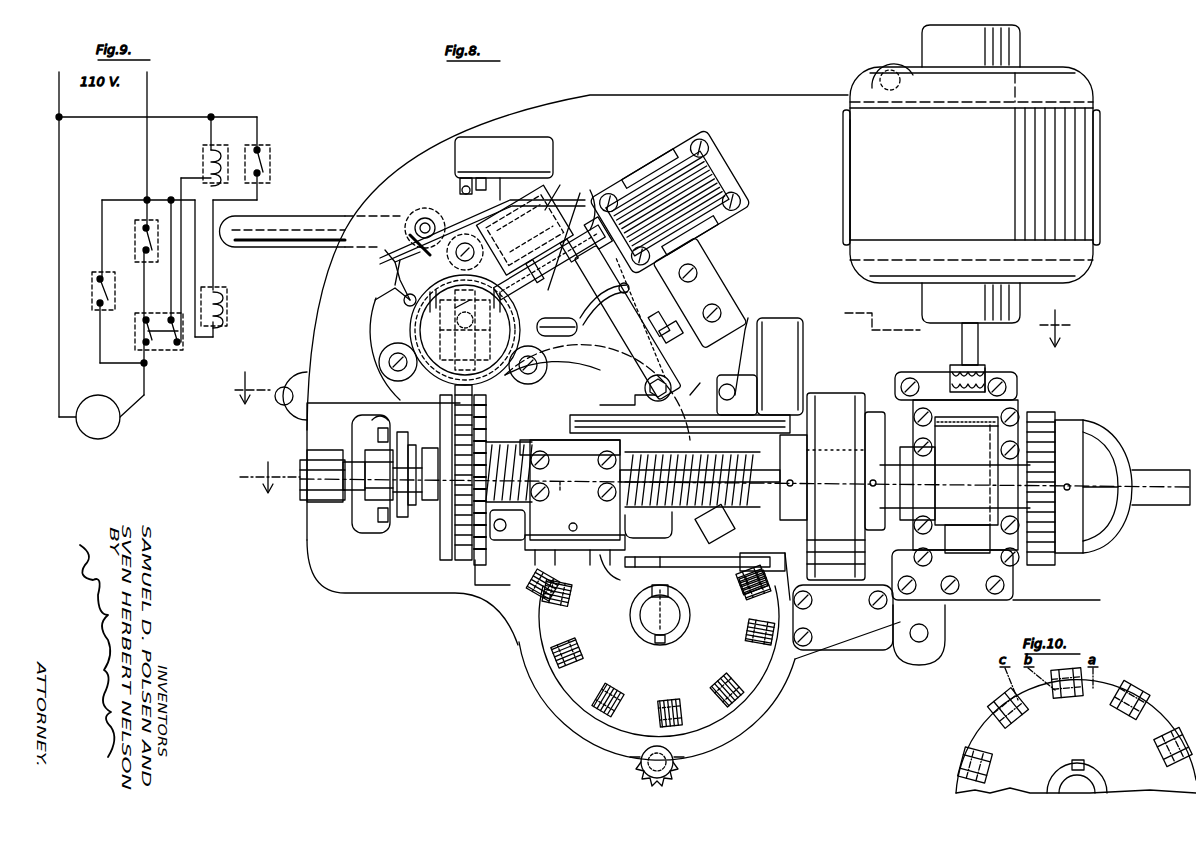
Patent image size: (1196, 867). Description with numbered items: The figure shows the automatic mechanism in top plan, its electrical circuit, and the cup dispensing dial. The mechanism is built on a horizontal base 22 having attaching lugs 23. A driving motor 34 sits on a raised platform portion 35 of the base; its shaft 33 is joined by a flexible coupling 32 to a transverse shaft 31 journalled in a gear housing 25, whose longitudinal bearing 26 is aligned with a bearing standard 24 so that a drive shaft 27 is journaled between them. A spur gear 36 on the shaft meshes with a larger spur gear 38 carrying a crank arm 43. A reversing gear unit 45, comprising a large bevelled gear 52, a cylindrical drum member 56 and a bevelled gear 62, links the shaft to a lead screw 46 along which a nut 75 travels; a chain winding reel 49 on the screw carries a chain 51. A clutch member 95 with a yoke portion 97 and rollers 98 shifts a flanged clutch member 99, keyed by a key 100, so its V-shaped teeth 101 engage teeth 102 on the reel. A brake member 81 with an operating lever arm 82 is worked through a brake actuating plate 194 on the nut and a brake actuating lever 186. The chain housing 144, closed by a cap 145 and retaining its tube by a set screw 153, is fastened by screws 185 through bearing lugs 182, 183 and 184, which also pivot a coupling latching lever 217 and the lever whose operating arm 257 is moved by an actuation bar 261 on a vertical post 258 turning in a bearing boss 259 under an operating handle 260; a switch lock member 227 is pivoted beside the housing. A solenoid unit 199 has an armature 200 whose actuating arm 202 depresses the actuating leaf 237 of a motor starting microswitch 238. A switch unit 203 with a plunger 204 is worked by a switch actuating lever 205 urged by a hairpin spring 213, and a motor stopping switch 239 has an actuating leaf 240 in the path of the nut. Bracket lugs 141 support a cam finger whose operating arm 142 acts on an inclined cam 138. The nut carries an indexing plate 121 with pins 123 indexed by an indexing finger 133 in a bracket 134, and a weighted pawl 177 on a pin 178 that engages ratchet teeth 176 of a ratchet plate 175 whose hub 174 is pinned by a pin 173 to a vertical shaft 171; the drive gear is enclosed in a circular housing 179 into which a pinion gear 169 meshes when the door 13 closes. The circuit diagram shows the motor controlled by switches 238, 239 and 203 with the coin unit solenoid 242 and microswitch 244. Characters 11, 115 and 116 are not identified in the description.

In FIG. 8, the base 22 is at (764, 100).
In FIG. 8, the attaching lugs 23 is at (284, 374).
In FIG. 9, the driving motor 34 is at (102, 440).
In FIG. 8, the driving motor 34 is at (855, 176).
In FIG. 8, the raised platform portion 35 is at (848, 195).
In FIG. 8, the motor shaft 33 is at (960, 332).
In FIG. 8, the flexible coupling 32 is at (952, 368).
In FIG. 8, the transverse horizontal shaft 31 is at (990, 376).
In FIG. 8, the gear housing 25 is at (938, 425).
In FIG. 8, the longitudinal bearing 26 is at (915, 448).
In FIG. 8, the spur gear 38 is at (1048, 414).
In FIG. 8, the spur gear 36 is at (1062, 470).
In FIG. 8, the crank arm 43 is at (1132, 456).
In FIG. 8, the door 13 is at (652, 357).
In FIG. 8, the section line 11 is at (266, 477).
In FIG. 9, the microswitch 238 is at (135, 246).
In FIG. 8, the microswitch 238 is at (548, 128).
In FIG. 8, the actuating leaf 237 is at (502, 177).
In FIG. 8, the coupling latching lever 217 is at (527, 200).
In FIG. 8, the switch lock member 227 is at (561, 185).
In FIG. 8, the actuating arm 202 is at (590, 205).
In FIG. 8, the armature 200 is at (602, 222).
In FIG. 9, the solenoid unit 199 is at (229, 307).
In FIG. 8, the solenoid unit 199 is at (718, 184).
In FIG. 9, the switch unit 203 is at (93, 285).
In FIG. 8, the switch unit 203 is at (712, 284).
In FIG. 8, the hairpin spring 213 is at (635, 298).
In FIG. 8, the operating plunger 204 is at (668, 338).
In FIG. 8, the switch actuating lever 205 is at (654, 360).
In FIG. 8, the brake actuating lever 186 is at (593, 375).
In FIG. 8, the brake actuating plate 194 is at (605, 404).
In FIG. 8, the operating lever arm 82 is at (648, 395).
In FIG. 8, the brake member 81 is at (754, 413).
In FIG. 8, the bearing boss 259 is at (792, 318).
In FIG. 8, the actuating leaf 240 is at (742, 389).
In FIG. 8, the cylindrical drum member 56 is at (824, 397).
In FIG. 8, the reversing gear unit 45 is at (850, 386).
In FIG. 8, the large bevelled gear 52 is at (872, 412).
In FIG. 8, the bevelled gear 62 is at (830, 443).
In FIG. 8, the operating handle 260 is at (310, 218).
In FIG. 8, the vertical post 258 is at (410, 225).
In FIG. 8, the actuation bar 261 is at (424, 222).
In FIG. 8, the bearing lug 184 is at (462, 242).
In FIG. 8, the operating arm 257 is at (372, 274).
In FIG. 8, the set screw 153 is at (385, 292).
In FIG. 8, the flanged closure cap 145 is at (404, 303).
In FIG. 8, the cylindrical housing member 144 is at (395, 322).
In FIG. 8, the operating arm 142 is at (465, 330).
In FIG. 8, the bearing lug 183 is at (380, 358).
In FIG. 8, the fastening screws 185 is at (380, 370).
In FIG. 8, the bearing lug 182 is at (546, 362).
In FIG. 8, the bracket lugs 141 is at (572, 400).
In FIG. 8, the flanged clutch member 99 is at (395, 418).
In FIG. 8, the rollers 98 is at (386, 428).
In FIG. 8, the V-shaped teeth 101 is at (405, 430).
In FIG. 8, the chain 51 is at (455, 418).
In FIG. 8, the lead screw 46 is at (432, 448).
In FIG. 8, the longitudinal drive shaft 27 is at (350, 470).
In FIG. 8, the key 100 is at (368, 475).
In FIG. 8, the bearing standard 24 is at (305, 498).
In FIG. 8, the clutch member 95 is at (346, 512).
In FIG. 8, the yoke portion 97 is at (365, 525).
In FIG. 8, the V-shaped teeth 102 is at (412, 505).
In FIG. 8, the chain winding reel 49 is at (452, 542).
In FIG. 8, the bracket 115 is at (500, 545).
In FIG. 8, the bracket arm 116 is at (494, 579).
In FIG. 8, the indexing plate 121 is at (601, 572).
In FIG. 8, the pins 123 is at (625, 578).
In FIG. 8, the inclined cam 138 is at (572, 502).
In FIG. 8, the pin 178 is at (560, 485).
In FIG. 8, the nut 75 is at (642, 452).
In FIG. 8, the weighted pawl 177 is at (645, 543).
In FIG. 10, the weighted pawl 177 is at (1095, 680).
In FIG. 8, the indexing finger 133 is at (694, 562).
In FIG. 8, the bracket 134 is at (760, 588).
In FIG. 8, the vertical shaft 171 is at (648, 628).
In FIG. 8, the pin 173 is at (660, 645).
In FIG. 8, the hub 174 is at (680, 628).
In FIG. 8, the ratchet teeth 176 is at (747, 645).
In FIG. 10, the ratchet teeth 176 is at (1066, 700).
In FIG. 8, the circular ratchet plate 175 is at (765, 662).
In FIG. 10, the circular ratchet plate 175 is at (960, 727).
In FIG. 8, the circular housing 179 is at (740, 728).
In FIG. 8, the pinion gear 169 is at (678, 774).
In FIG. 9, the solenoid 242 is at (200, 162).
In FIG. 9, the microswitch 244 is at (273, 158).
In FIG. 9, the motor stopping switch 239 is at (161, 352).